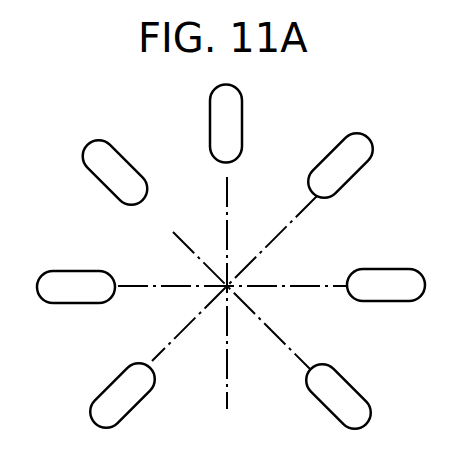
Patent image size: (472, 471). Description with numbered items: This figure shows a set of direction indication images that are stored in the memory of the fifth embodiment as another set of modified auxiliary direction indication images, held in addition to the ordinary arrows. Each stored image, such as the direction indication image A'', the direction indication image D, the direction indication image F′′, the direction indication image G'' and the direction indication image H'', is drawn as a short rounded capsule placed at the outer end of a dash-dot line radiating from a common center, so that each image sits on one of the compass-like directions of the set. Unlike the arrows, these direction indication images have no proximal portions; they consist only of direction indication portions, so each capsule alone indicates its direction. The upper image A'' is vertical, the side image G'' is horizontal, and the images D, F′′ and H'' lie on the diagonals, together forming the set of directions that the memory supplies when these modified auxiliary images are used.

The direction indication image A'' is at (249, 120).
The direction indication image D is at (356, 393).
The direction indication image F′′ is at (137, 399).
The direction indication image G'' is at (91, 265).
The direction indication image H'' is at (123, 164).